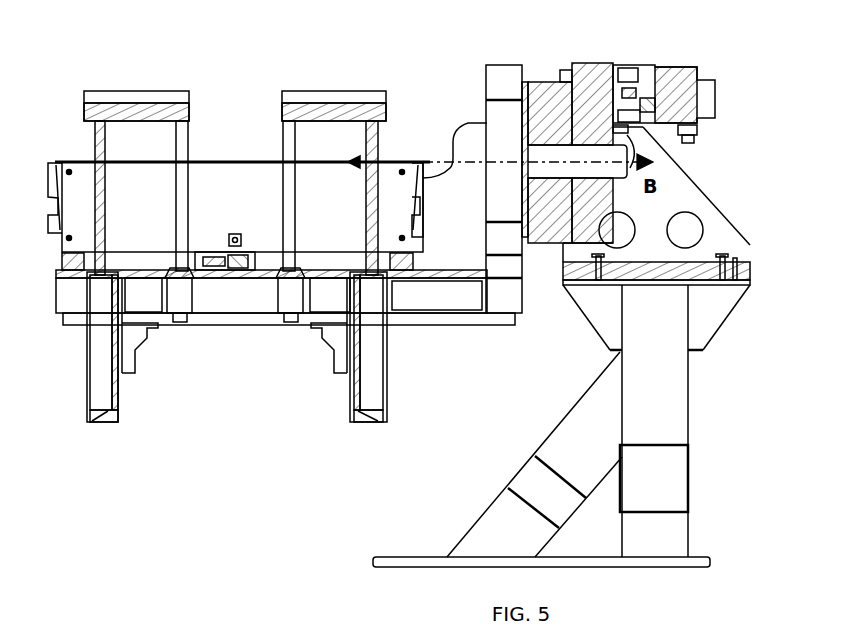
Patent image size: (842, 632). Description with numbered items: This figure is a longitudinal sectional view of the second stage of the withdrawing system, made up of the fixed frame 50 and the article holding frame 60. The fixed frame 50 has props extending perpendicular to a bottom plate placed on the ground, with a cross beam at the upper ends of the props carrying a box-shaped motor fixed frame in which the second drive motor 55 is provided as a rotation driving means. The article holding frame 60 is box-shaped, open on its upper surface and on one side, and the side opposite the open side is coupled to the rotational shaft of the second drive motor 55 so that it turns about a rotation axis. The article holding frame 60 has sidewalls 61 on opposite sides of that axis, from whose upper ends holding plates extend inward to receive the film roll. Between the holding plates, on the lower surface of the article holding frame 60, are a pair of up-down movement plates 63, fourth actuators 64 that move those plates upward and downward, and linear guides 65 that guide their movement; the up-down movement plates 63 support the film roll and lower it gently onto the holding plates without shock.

The fixed frame 50 is at (704, 175).
The second drive motor 55 is at (669, 58).
The article holding frame 60 is at (281, 234).
The sidewalls 61 is at (256, 190).
The up-down movement plates 63 is at (128, 82).
The fourth actuators 64 is at (343, 385).
The linear guides 65 is at (183, 343).